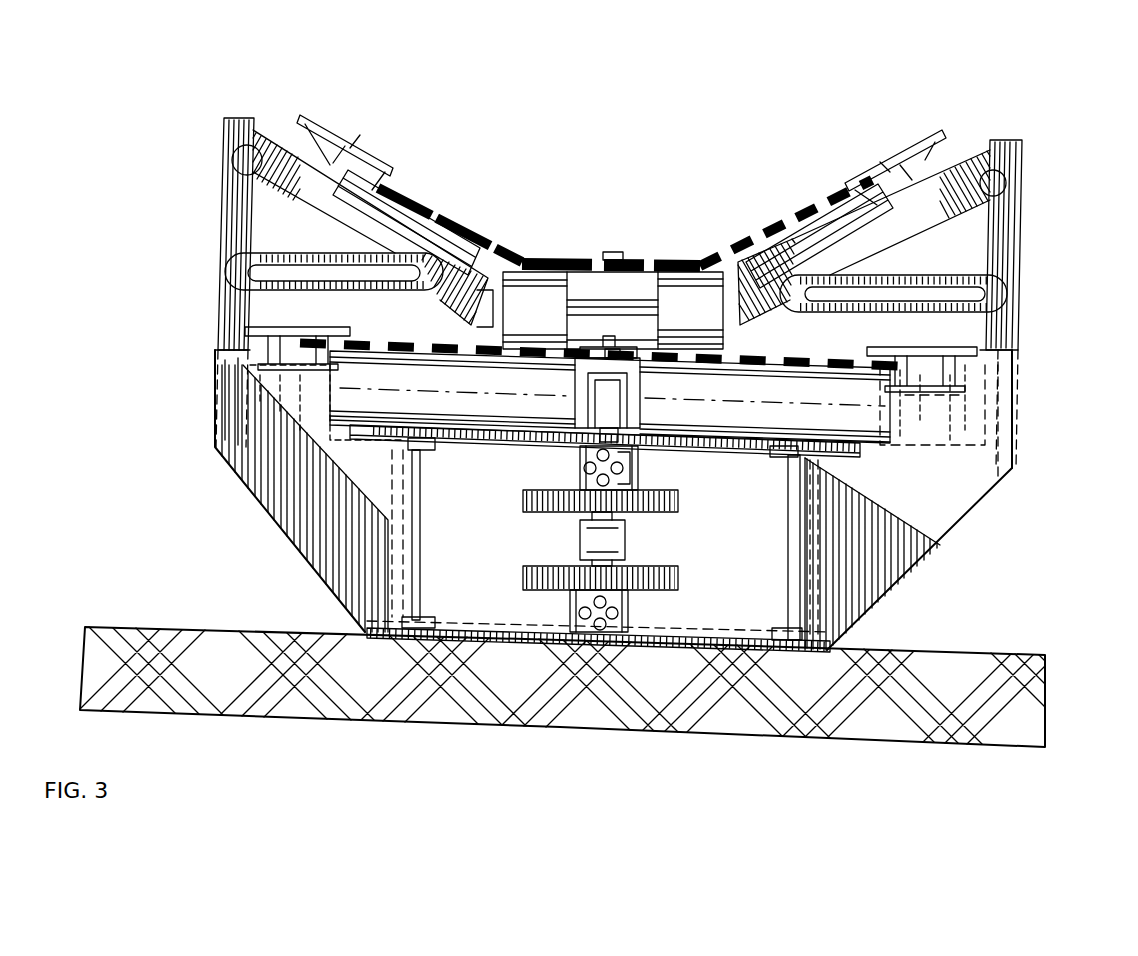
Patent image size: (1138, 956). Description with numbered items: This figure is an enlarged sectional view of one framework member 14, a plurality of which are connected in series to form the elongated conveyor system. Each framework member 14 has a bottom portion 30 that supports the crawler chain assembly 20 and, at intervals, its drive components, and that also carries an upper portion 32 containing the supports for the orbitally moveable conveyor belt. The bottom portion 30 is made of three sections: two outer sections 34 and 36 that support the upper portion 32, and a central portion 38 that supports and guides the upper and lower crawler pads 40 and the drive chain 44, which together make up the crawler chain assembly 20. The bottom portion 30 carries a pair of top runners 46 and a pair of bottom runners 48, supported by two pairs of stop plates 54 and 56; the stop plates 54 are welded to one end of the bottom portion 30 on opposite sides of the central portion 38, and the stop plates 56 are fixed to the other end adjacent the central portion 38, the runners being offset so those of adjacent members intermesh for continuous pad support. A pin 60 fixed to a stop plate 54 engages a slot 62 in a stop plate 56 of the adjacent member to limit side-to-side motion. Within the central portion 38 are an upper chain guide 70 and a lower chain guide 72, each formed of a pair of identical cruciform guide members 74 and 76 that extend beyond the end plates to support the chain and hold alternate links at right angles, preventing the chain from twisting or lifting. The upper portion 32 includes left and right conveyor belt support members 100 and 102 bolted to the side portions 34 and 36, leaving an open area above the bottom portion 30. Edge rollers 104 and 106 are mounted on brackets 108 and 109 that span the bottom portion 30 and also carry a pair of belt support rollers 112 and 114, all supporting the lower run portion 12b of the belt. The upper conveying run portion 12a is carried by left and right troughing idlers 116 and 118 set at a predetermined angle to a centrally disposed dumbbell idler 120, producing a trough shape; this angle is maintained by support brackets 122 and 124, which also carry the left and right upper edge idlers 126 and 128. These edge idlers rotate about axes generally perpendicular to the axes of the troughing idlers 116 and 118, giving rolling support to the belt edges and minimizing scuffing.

The framework member 14 is at (1043, 165).
The upper conveying run portion 12a is at (553, 282).
The lower run portion 12b is at (380, 345).
The crawler chain assembly 20 is at (527, 484).
The bottom portion 30 is at (950, 467).
The upper portion 32 is at (1015, 330).
The outer section 34 is at (932, 558).
The outer section 36 is at (277, 527).
The central portion 38 is at (510, 662).
The upper and lower crawler pads 40 is at (367, 630).
The drive chain 44 is at (636, 463).
The top runners 46 is at (433, 450).
The bottom runners 48 is at (420, 617).
The stop plates 54 is at (421, 572).
The stop plates 56 is at (330, 566).
The pin 60 is at (255, 510).
The slot 62 is at (398, 510).
The upper chain guide 70 is at (578, 459).
The lower chain guide 72 is at (630, 621).
The guide member 74 is at (623, 483).
The guide member 76 is at (575, 498).
The left conveyor belt support member 100 is at (231, 118).
The right conveyor belt support member 102 is at (1005, 143).
The edge roller 104 is at (250, 340).
The edge roller 106 is at (965, 355).
The bracket 108 is at (235, 388).
The bracket 109 is at (965, 398).
The belt support roller 112 is at (420, 390).
The belt support roller 114 is at (808, 380).
The left troughing idler 116 is at (422, 228).
The right troughing idler 118 is at (815, 247).
The dumbbell idler 120 is at (680, 290).
The support bracket 122 is at (257, 165).
The support bracket 124 is at (1020, 186).
The left upper edge idler 126 is at (357, 160).
The right upper edge idler 128 is at (872, 173).